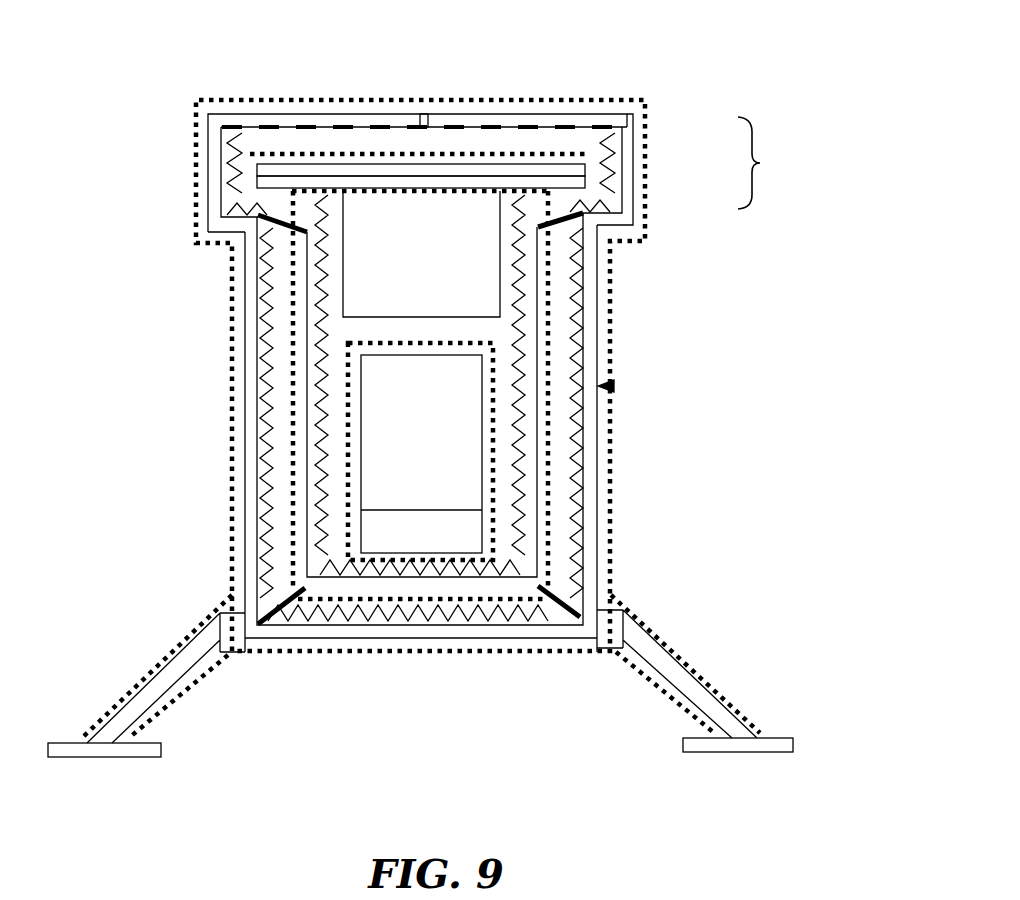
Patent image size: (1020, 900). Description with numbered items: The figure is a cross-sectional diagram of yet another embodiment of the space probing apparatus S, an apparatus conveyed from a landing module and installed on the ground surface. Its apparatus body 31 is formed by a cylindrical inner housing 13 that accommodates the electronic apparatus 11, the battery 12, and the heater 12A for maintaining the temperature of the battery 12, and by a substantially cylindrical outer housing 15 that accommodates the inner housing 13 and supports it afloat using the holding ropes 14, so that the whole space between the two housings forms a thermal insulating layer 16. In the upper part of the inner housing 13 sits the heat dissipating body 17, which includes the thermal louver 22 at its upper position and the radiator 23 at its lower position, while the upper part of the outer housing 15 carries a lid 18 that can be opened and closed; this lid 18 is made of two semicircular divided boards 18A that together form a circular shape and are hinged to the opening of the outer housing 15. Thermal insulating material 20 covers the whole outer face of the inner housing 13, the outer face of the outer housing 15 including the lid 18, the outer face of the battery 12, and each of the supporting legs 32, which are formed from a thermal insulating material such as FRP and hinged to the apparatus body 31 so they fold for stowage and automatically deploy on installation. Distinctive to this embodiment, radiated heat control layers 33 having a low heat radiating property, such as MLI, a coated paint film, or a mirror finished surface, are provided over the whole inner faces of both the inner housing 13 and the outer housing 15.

The space probing apparatus S is at (608, 93).
The electronic apparatus 11 is at (450, 267).
The battery 12 is at (449, 446).
The heater 12A is at (410, 542).
The inner housing 13 is at (533, 432).
The holding ropes 14 is at (277, 235).
The outer housing 15 is at (592, 482).
The thermal insulating layer 16 is at (278, 410).
The heat dissipating body 17 is at (773, 163).
The lid 18 is at (309, 124).
The divided board 18A is at (374, 120).
The thermal insulating material 20 is at (459, 99).
The thermal louver 22 is at (585, 170).
The radiator 23 is at (583, 183).
The apparatus body 31 is at (612, 386).
The supporting legs 32 is at (165, 680).
The radiated heat control layer 33 is at (268, 490).